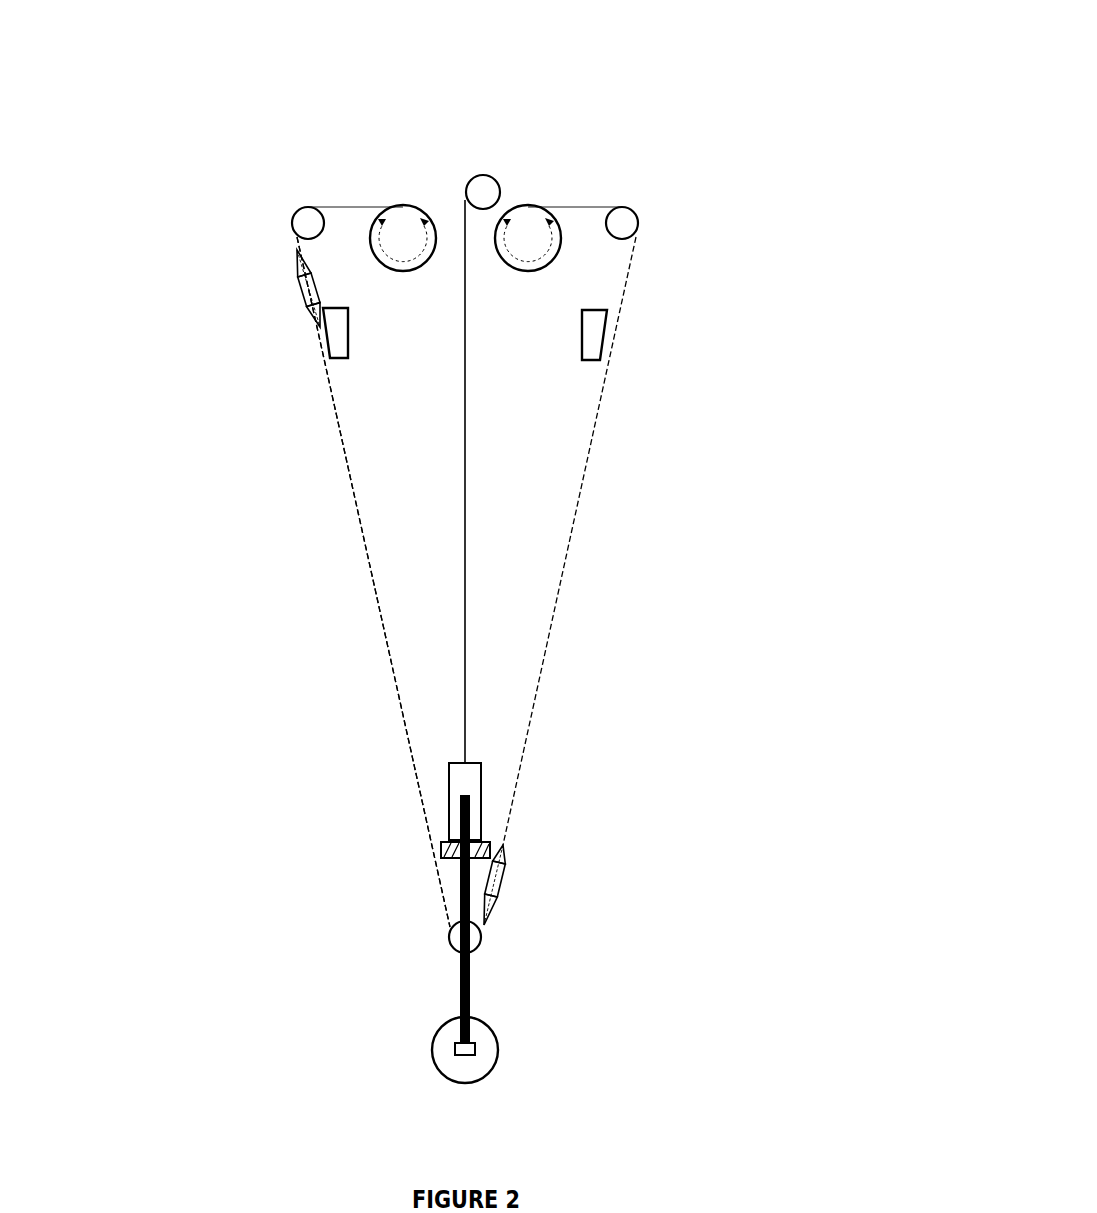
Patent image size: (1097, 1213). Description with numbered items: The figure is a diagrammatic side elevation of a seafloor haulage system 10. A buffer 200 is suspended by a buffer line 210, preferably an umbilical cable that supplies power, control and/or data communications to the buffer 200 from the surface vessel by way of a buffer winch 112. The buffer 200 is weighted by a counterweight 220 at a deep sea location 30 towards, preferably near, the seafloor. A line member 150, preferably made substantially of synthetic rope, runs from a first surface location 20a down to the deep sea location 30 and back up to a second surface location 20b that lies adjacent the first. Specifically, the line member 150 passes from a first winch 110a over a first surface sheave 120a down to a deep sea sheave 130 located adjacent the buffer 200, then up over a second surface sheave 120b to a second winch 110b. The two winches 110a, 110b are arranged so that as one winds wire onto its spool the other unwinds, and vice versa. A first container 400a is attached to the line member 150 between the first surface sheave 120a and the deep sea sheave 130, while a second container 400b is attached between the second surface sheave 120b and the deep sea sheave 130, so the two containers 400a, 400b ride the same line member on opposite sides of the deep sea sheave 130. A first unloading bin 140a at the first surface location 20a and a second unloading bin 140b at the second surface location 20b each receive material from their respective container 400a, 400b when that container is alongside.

The haulage system 10 is at (140, 582).
The first surface location 20a is at (137, 215).
The second surface location 20b is at (750, 210).
The deep sea location 30 is at (125, 925).
The first winch 110a is at (397, 205).
The second winch 110b is at (533, 205).
The buffer winch 112 is at (487, 175).
The first surface sheave 120a is at (300, 206).
The second surface sheave 120b is at (633, 207).
The deep sea sheave 130 is at (451, 925).
The first unloading bin 140a is at (332, 362).
The second unloading bin 140b is at (604, 340).
The line member 150 is at (337, 430).
The buffer 200 is at (449, 792).
The buffer line 210 is at (466, 545).
The counterweight 220 is at (437, 1040).
The first container 400a is at (298, 295).
The second container 400b is at (503, 882).